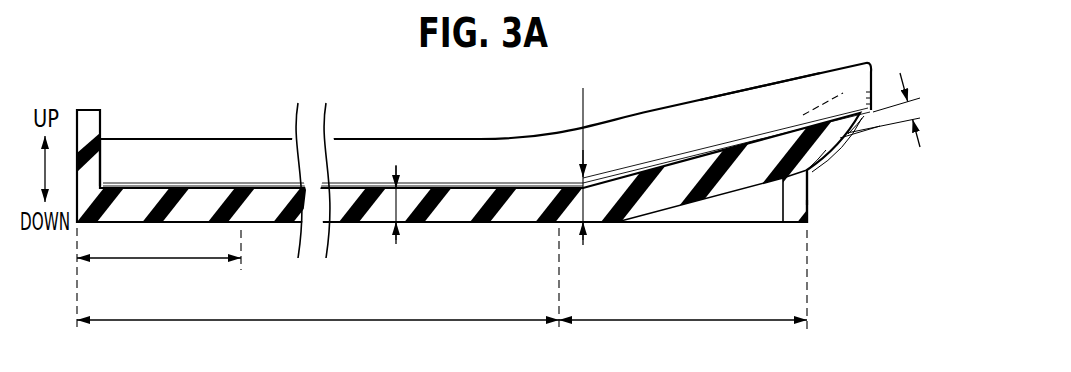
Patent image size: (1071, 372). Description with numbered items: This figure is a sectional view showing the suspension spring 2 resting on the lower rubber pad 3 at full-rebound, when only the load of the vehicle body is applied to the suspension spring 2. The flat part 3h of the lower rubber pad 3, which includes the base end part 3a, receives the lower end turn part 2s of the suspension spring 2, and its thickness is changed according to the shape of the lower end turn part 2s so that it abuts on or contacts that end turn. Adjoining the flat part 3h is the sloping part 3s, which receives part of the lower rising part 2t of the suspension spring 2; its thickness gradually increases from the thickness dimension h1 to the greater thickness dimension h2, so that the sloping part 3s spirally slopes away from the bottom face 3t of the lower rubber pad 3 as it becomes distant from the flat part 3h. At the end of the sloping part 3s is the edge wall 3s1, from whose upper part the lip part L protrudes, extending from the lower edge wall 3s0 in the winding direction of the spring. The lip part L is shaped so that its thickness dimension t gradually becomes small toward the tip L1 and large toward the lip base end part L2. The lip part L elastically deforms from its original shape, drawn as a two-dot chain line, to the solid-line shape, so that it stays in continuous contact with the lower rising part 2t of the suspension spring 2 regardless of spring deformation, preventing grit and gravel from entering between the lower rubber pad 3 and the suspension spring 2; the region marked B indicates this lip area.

The suspension spring 2 is at (470, 136).
The lower end turn part 2s is at (423, 148).
The lower rising part 2t is at (758, 103).
The thickness dimension t is at (917, 105).
The thickness dimension h2 is at (565, 166).
The thickness dimension h1 is at (390, 207).
The lower rubber pad 3 is at (706, 232).
The bottom face 3t is at (522, 224).
The base end part 3a is at (159, 280).
The flat part 3h is at (318, 292).
The sloping part 3s is at (683, 293).
The lower edge wall 3s0 is at (810, 216).
The edge wall 3s1 is at (811, 204).
The lip part L is at (858, 133).
The tip L1 is at (846, 136).
The lip base end part L2 is at (812, 172).
The region B is at (878, 258).